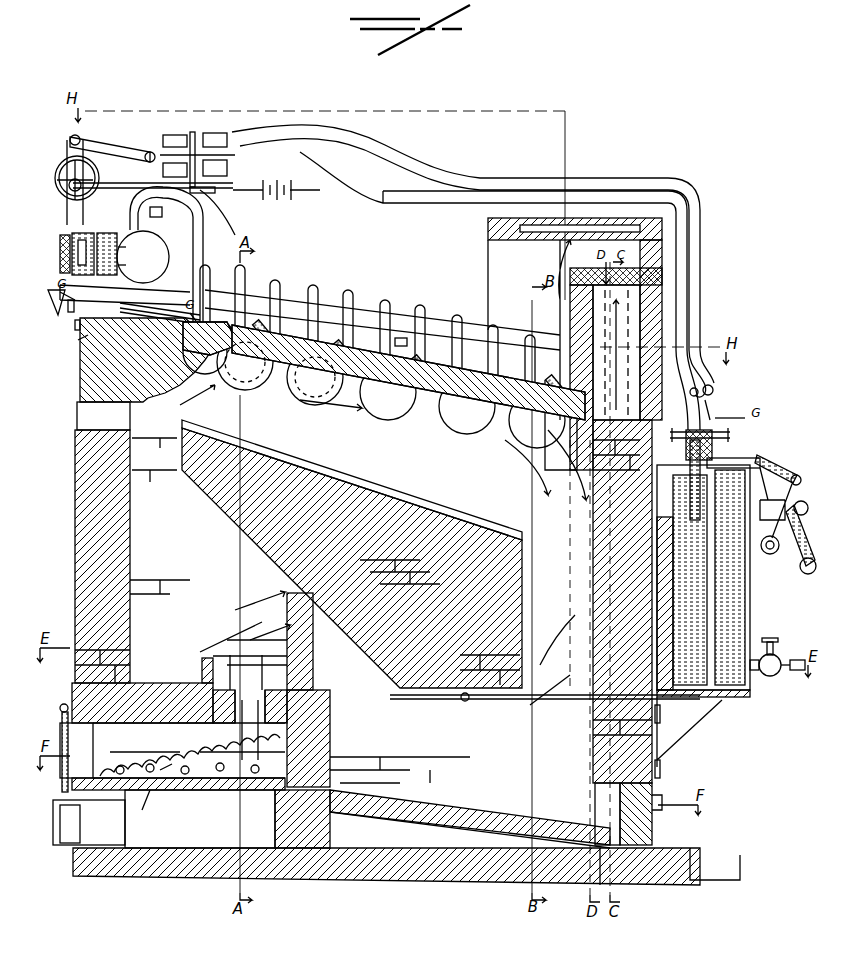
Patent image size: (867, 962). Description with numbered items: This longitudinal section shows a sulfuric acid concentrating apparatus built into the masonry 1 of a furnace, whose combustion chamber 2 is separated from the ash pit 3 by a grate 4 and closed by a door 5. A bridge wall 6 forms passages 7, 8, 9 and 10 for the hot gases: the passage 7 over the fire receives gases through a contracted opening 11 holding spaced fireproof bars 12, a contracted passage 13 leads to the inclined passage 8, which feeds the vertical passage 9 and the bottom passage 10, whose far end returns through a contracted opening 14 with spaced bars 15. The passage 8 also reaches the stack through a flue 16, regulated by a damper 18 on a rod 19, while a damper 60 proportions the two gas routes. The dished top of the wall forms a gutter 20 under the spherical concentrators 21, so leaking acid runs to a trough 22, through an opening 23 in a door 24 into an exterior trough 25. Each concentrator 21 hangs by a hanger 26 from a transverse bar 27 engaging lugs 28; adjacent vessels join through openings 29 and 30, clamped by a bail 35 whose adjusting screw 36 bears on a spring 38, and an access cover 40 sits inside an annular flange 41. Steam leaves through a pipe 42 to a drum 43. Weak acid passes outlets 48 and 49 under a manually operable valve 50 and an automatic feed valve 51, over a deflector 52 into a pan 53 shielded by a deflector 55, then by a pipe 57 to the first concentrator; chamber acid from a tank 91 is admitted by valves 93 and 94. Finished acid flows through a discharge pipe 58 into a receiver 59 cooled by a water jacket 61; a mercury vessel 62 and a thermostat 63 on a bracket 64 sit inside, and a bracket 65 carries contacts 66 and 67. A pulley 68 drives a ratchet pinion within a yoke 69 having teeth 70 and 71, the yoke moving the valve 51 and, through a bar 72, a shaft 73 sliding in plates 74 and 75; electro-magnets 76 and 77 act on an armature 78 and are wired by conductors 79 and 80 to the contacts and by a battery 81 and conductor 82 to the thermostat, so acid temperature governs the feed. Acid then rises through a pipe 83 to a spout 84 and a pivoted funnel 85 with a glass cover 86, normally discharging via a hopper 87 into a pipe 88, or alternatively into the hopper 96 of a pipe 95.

The masonry 1 is at (116, 548).
The combustion chamber 2 is at (189, 750).
The ash pit 3 is at (200, 819).
The grate 4 is at (170, 776).
The door 5 is at (90, 742).
The bridge wall 6 is at (352, 558).
The passage 7 is at (170, 582).
The inclined passage 8 is at (271, 419).
The vertical passage 9 is at (552, 652).
The horizontal passage 10 is at (400, 758).
The contracted opening 11 is at (250, 725).
The spaced bars 12 is at (244, 672).
The contracted passage 13 is at (154, 460).
The contracted opening 14 is at (300, 645).
The spaced bars 15 is at (300, 662).
The flue 16 is at (560, 225).
The damper 18 is at (616, 355).
The rod 19 is at (625, 268).
The gutter 20 is at (293, 460).
The concentrators 21 is at (525, 428).
The trough 22 is at (417, 813).
The opening 23 is at (640, 882).
The door 24 is at (652, 822).
The exterior trough 25 is at (722, 864).
The hangers 26 is at (246, 273).
The transverse bars 27 is at (208, 270).
The lugs 28 is at (78, 395).
The opening 29 is at (245, 362).
The opening 30 is at (302, 377).
The bail 35 is at (282, 294).
The adjusting screw 36 is at (402, 333).
The spring 38 is at (386, 335).
The cover 40 is at (342, 340).
The annular flange 41 is at (561, 385).
The pipe 42 is at (198, 250).
The drum 43 is at (143, 257).
The discharge outlet 48 is at (59, 309).
The discharge outlet 49 is at (125, 299).
The manually operable valve 50 is at (58, 245).
The automatically operable valve 51 is at (87, 246).
The deflector 52 is at (160, 303).
The pan 53 is at (80, 339).
The deflector 55 is at (77, 327).
The pipe 57 is at (160, 305).
The discharge pipe 58 is at (562, 460).
The receiver 59 is at (694, 737).
The damper 60 is at (422, 700).
The water jacket 61 is at (750, 620).
The vessel 62 is at (688, 500).
The thermostat 63 is at (702, 456).
The bracket 64 is at (715, 402).
The bracket 65 is at (716, 434).
The adjustable contact 66 is at (700, 400).
The adjustable contact 67 is at (688, 400).
The pulley 68 is at (108, 178).
The yoke 69 is at (70, 140).
The ratchet teeth 70 is at (60, 182).
The ratchet teeth 71 is at (90, 178).
The bar 72 is at (135, 148).
The shaft 73 is at (230, 162).
The plate 74 is at (172, 135).
The plate 75 is at (222, 134).
The electro-magnet 76 is at (192, 132).
The electro-magnet 77 is at (228, 160).
The armature 78 is at (212, 205).
The conductor 79 is at (398, 160).
The conductor 80 is at (464, 244).
The battery 81 is at (288, 196).
The conductor 82 is at (440, 203).
The pipe 83 is at (746, 577).
The spout 84 is at (733, 452).
The funnel 85 is at (806, 479).
The glass cover 86 is at (776, 464).
The hopper 87 is at (765, 503).
The pipe 88 is at (770, 554).
The tank 91 is at (111, 246).
The manually operable valve 93 is at (131, 265).
The manually operable valve 94 is at (130, 247).
The pipe 95 is at (801, 550).
The hopper 96 is at (812, 509).